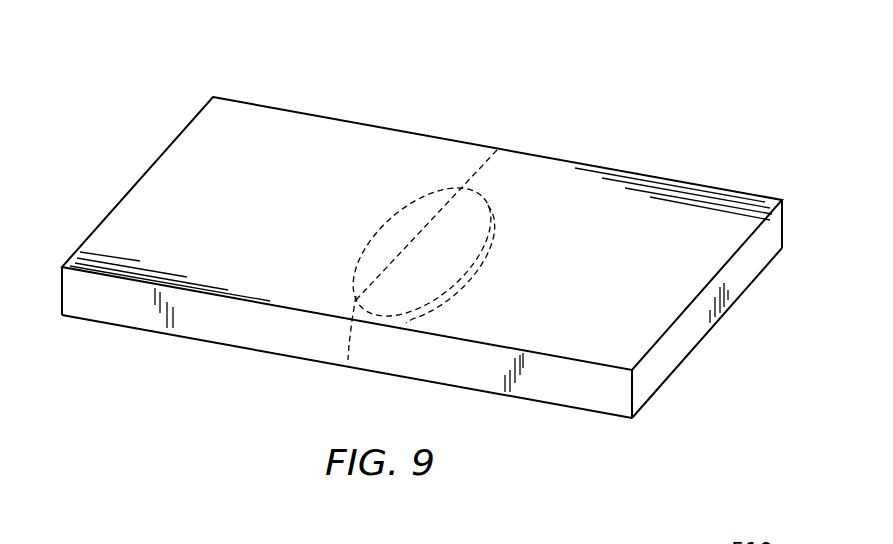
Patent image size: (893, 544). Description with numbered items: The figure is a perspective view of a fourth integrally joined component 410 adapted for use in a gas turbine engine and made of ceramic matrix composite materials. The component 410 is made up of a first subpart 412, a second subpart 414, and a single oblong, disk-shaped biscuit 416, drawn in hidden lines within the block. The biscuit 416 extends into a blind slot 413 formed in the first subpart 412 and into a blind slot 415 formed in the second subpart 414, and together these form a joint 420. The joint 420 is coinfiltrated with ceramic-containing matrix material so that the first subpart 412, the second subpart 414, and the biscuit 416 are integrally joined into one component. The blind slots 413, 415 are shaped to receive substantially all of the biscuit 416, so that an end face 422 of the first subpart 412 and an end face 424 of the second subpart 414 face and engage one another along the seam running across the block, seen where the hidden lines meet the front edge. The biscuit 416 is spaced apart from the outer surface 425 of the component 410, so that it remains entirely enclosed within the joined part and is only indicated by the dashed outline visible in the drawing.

The integrally joined component 410 is at (648, 52).
The first subpart 412 is at (255, 100).
The blind slot 413 is at (403, 239).
The second subpart 414 is at (748, 190).
The blind slot 415 is at (457, 233).
The biscuit 416 is at (490, 202).
The joint 420 is at (437, 178).
The end face 422 is at (347, 347).
The end face 424 is at (350, 360).
The outer surface 425 is at (317, 133).